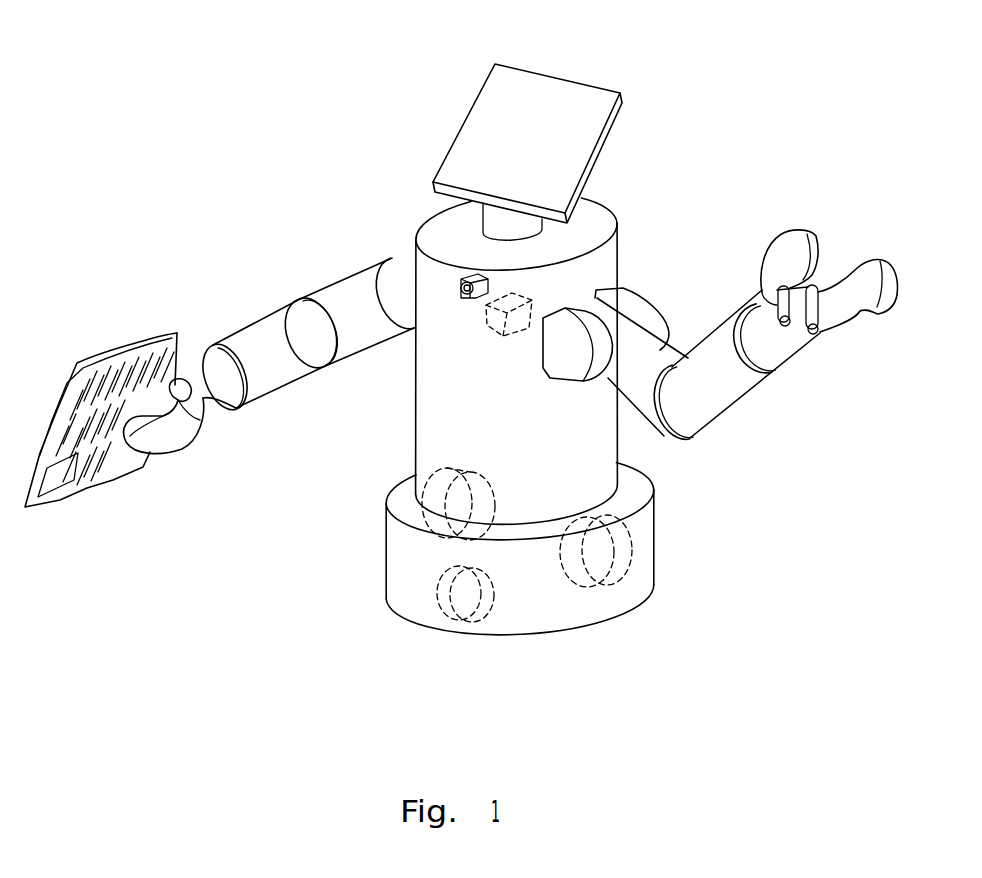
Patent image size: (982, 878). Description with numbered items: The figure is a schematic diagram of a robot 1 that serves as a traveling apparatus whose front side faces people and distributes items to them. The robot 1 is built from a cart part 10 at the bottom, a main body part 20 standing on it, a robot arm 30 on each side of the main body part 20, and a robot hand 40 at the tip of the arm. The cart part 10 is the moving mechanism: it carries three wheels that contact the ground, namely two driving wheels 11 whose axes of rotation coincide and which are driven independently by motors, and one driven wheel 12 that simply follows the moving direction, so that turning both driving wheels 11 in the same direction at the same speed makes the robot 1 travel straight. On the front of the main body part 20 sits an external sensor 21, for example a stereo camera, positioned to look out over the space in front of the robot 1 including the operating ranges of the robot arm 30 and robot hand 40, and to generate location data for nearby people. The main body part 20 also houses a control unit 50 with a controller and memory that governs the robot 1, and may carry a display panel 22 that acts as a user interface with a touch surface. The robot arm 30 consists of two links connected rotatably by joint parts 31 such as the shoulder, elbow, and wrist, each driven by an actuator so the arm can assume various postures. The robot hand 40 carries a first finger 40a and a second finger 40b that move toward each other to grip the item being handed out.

The robot 1 is at (688, 122).
The cart part 10 is at (652, 530).
The driving wheels 11 is at (418, 530).
The driven wheel 12 is at (486, 634).
The main body part 20 is at (610, 262).
The external sensor 21 is at (463, 272).
The display panel 22 is at (577, 97).
The robot arm 30 is at (265, 320).
The joint part 31 is at (243, 380).
The robot hand 40 is at (193, 350).
The first finger 40a is at (136, 330).
The second finger 40b is at (167, 448).
The control unit 50 is at (487, 323).